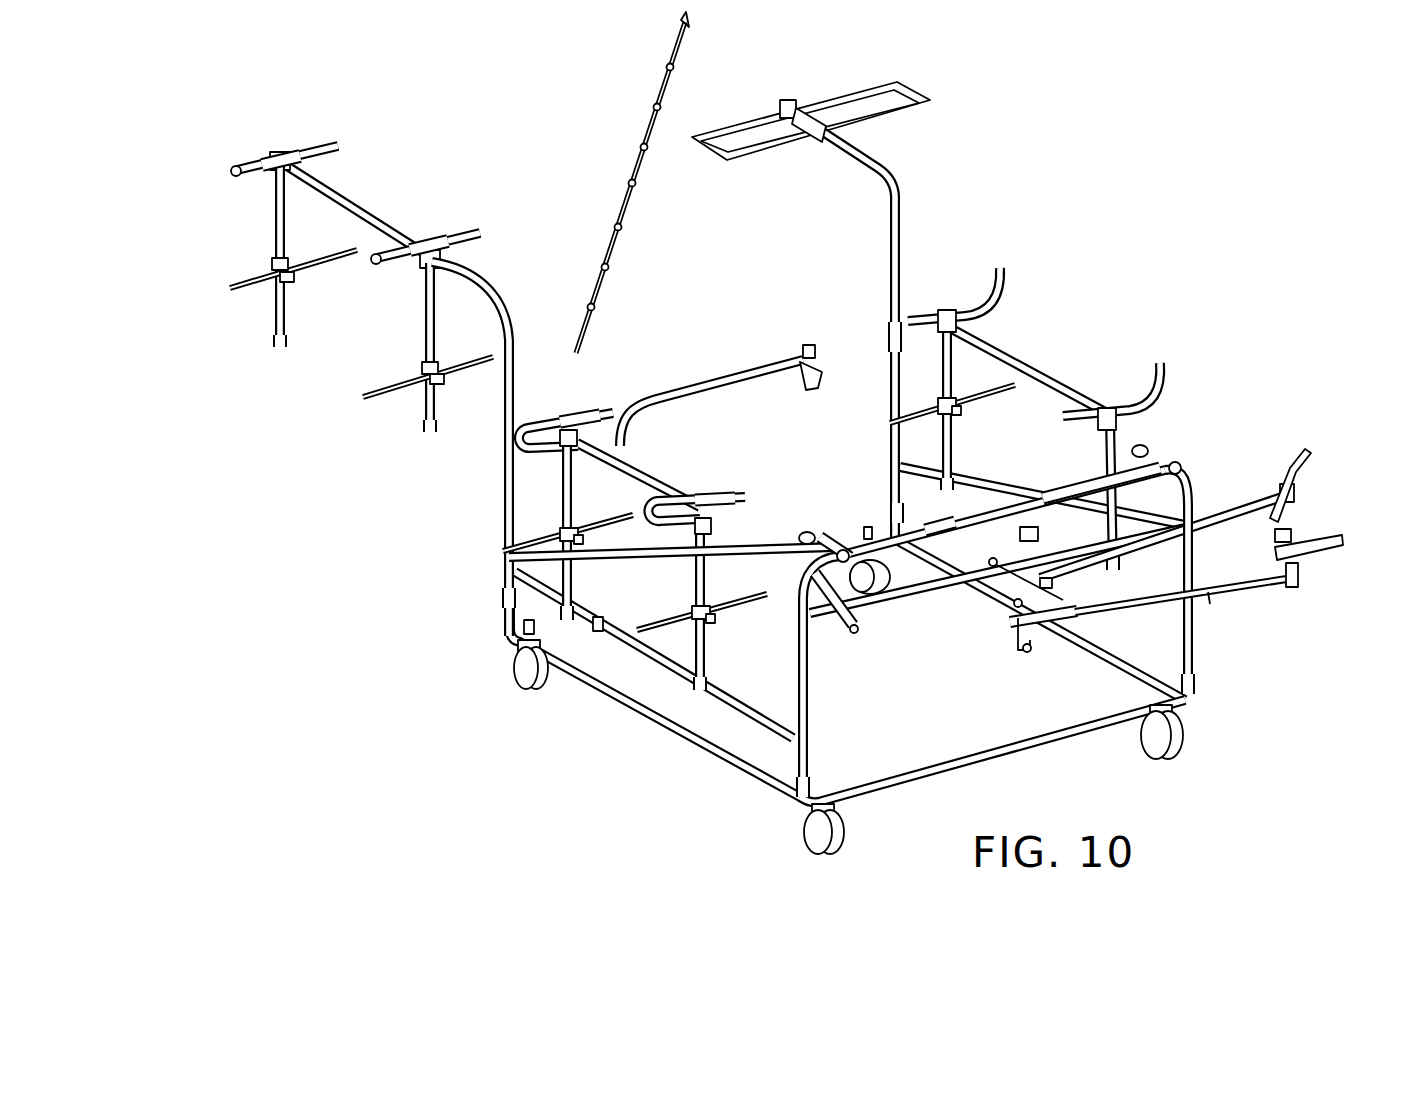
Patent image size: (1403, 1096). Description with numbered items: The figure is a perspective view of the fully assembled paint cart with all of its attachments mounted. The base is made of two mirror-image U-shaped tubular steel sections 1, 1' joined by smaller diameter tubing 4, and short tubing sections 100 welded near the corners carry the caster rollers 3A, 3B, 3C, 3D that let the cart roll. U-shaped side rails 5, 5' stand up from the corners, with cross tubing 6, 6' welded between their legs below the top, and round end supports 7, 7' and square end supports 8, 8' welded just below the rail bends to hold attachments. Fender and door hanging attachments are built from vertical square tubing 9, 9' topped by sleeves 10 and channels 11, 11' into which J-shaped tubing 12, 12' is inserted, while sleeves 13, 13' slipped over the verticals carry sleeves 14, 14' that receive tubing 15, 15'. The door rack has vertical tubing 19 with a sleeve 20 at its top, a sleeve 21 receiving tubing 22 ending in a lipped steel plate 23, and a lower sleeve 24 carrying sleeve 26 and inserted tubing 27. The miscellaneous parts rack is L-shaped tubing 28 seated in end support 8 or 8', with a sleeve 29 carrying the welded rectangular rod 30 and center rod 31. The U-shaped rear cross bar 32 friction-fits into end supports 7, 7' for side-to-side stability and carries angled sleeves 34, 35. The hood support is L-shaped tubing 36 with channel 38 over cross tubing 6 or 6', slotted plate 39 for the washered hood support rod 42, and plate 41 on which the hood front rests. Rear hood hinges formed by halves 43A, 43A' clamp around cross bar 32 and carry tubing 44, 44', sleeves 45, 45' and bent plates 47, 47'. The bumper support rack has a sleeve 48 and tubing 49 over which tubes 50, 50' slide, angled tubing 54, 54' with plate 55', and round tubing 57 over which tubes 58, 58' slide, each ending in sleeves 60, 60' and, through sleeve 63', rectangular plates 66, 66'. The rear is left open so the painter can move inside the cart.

The base section 1 is at (655, 698).
The base section 1' is at (1040, 620).
The connecting tubing 4 is at (1005, 752).
The caster roller 3A is at (826, 855).
The caster roller 3B is at (532, 690).
The caster roller 3C is at (893, 570).
The caster roller 3D is at (1180, 758).
The side rail 5 is at (638, 475).
The side rail 5' is at (1028, 370).
The cross tubing 6 is at (654, 655).
The cross tubing 6' is at (1042, 490).
The end support 7 is at (821, 676).
The end support 7' is at (1197, 573).
The end support 8 is at (470, 449).
The end support 8' is at (868, 431).
The square steel tubing 9 is at (643, 566).
The square steel tubing 9' is at (1030, 447).
The sleeve 10 is at (570, 420).
The steel channel 11 is at (616, 493).
The steel channel 11' is at (1013, 370).
The J-shaped tubing 12 is at (635, 451).
The J-shaped tubing 12' is at (1034, 342).
The sleeve 13 is at (616, 554).
The sleeve 13' is at (933, 427).
The sleeve 14 is at (658, 555).
The sleeve 14' is at (981, 418).
The square steel tubing 15 is at (635, 586).
The square steel tubing 15' is at (952, 393).
The square steel tubing 19 is at (276, 222).
The sleeve 20 is at (278, 168).
The sleeve 21 is at (300, 158).
The square steel tubing 22 is at (306, 150).
The steel plate 23 is at (234, 172).
The sleeve 24 is at (272, 258).
The sleeve 26 is at (294, 278).
The square steel tubing 27 is at (318, 258).
The L-shaped tubing 28 is at (902, 200).
The sleeve 29 is at (820, 148).
The steel rod 30 is at (855, 83).
The steel rod 31 is at (912, 92).
The rear cross bar tubing 32 is at (985, 517).
The sleeve 34 is at (1038, 534).
The sleeve 35 is at (989, 562).
The L-shaped tubing 36 is at (705, 380).
The steel channel 38 is at (598, 632).
The steel plate 39 is at (805, 390).
The steel plate 41 is at (805, 345).
The steel rod 42 is at (630, 210).
The hinge half 43A is at (930, 512).
The hinge half 43A' is at (1039, 479).
The square steel tubing 44 is at (831, 526).
The square steel tubing 44' is at (1101, 473).
The sleeve 45 is at (815, 523).
The sleeve 45' is at (1199, 451).
The steel plate 47 is at (784, 532).
The steel plate 47' is at (1165, 437).
The sleeve 48 is at (1046, 572).
The square steel tubing 49 is at (1012, 604).
The square steel tubing 50 is at (1000, 585).
The square steel tubing 50' is at (1161, 540).
The square steel tubing 54 is at (809, 603).
The square steel tubing 54' is at (1318, 495).
The steel plate 55' is at (1314, 485).
The round steel tubing 57 is at (1196, 618).
The tube 58 is at (1043, 647).
The tube 58' is at (1184, 608).
The sleeve 60 is at (997, 665).
The sleeve 60' is at (1322, 580).
The sleeve 63' is at (1315, 526).
The steel plate 66 is at (997, 637).
The steel plate 66' is at (1337, 547).
The caster tubing 100 is at (512, 628).